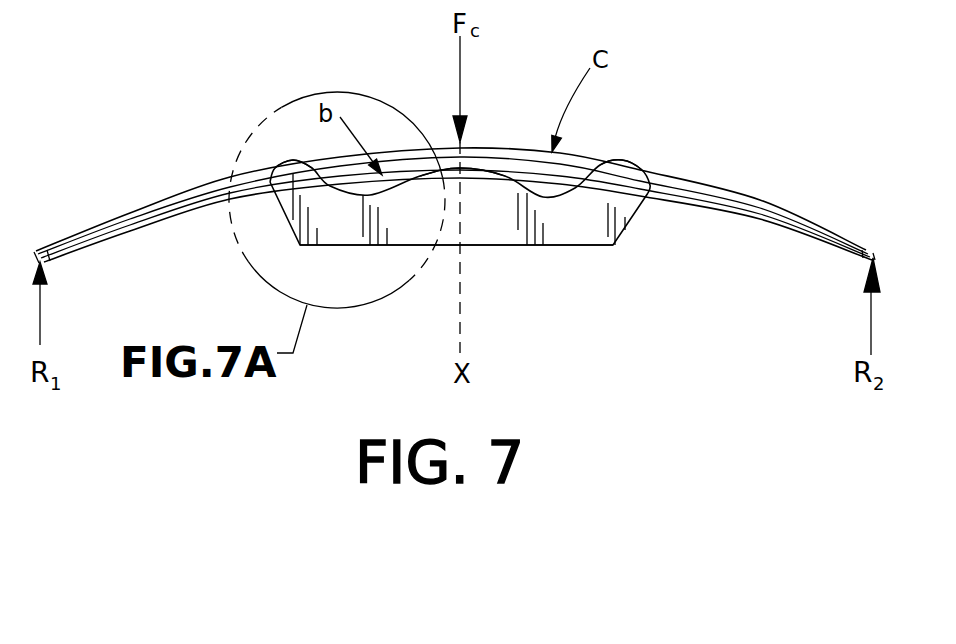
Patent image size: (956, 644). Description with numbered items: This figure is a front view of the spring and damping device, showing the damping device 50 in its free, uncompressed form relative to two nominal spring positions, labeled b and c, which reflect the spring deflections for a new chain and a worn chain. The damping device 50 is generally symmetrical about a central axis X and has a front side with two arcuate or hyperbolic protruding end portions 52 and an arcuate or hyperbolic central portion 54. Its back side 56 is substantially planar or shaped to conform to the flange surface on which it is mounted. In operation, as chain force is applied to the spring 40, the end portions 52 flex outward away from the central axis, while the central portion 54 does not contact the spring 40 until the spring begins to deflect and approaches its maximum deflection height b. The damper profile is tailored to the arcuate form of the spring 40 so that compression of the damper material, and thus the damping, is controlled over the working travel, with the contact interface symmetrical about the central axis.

The spring 40 is at (733, 190).
The damping device 50 is at (473, 228).
The protruding end portions 52 is at (285, 162).
The central portion 54 is at (470, 168).
The back side 56 is at (557, 246).